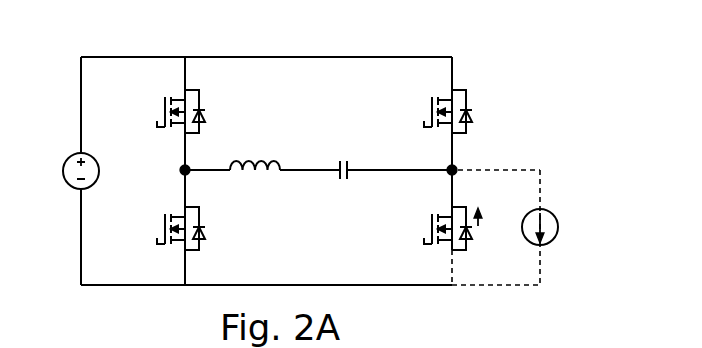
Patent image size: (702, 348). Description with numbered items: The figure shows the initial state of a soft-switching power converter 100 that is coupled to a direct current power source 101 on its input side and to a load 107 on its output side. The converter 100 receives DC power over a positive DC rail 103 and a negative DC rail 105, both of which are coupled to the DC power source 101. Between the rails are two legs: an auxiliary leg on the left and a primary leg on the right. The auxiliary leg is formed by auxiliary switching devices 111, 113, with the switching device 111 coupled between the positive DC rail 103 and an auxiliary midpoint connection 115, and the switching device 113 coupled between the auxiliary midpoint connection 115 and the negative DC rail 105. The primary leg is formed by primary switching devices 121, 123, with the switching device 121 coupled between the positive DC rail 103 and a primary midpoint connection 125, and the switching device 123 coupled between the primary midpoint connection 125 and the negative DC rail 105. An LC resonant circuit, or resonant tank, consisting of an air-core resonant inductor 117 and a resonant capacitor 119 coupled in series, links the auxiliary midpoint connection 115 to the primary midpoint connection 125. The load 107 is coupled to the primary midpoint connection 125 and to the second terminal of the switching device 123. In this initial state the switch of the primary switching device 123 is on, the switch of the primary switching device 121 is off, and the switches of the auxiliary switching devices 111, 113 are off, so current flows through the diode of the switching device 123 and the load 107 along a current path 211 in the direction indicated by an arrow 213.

The converter 100 is at (553, 282).
The DC power source 101 is at (68, 158).
The positive DC rail 103 is at (137, 56).
The negative DC rail 105 is at (84, 288).
The load 107 is at (548, 213).
The auxiliary switching device 111 is at (188, 90).
The auxiliary switching device 113 is at (190, 205).
The auxiliary midpoint connection 115 is at (183, 165).
The air-core resonant inductor 117 is at (258, 161).
The resonant capacitor 119 is at (344, 162).
The primary switching device 121 is at (456, 90).
The primary switching device 123 is at (450, 206).
The primary midpoint connection 125 is at (448, 166).
The current path 211 is at (490, 168).
The arrow 213 is at (478, 226).